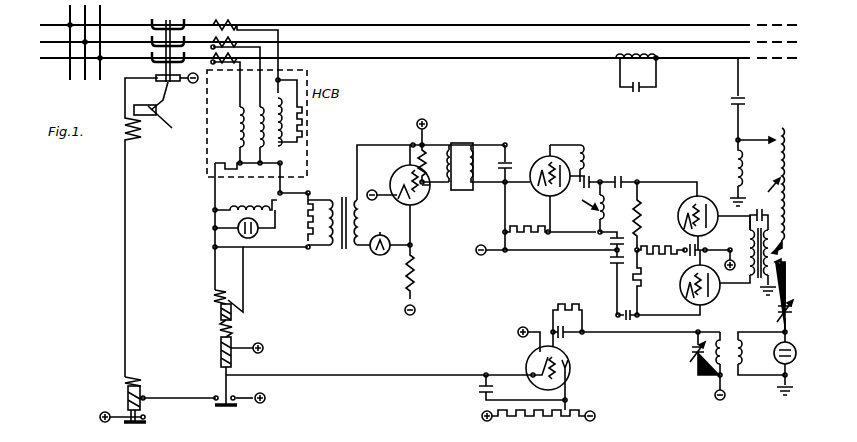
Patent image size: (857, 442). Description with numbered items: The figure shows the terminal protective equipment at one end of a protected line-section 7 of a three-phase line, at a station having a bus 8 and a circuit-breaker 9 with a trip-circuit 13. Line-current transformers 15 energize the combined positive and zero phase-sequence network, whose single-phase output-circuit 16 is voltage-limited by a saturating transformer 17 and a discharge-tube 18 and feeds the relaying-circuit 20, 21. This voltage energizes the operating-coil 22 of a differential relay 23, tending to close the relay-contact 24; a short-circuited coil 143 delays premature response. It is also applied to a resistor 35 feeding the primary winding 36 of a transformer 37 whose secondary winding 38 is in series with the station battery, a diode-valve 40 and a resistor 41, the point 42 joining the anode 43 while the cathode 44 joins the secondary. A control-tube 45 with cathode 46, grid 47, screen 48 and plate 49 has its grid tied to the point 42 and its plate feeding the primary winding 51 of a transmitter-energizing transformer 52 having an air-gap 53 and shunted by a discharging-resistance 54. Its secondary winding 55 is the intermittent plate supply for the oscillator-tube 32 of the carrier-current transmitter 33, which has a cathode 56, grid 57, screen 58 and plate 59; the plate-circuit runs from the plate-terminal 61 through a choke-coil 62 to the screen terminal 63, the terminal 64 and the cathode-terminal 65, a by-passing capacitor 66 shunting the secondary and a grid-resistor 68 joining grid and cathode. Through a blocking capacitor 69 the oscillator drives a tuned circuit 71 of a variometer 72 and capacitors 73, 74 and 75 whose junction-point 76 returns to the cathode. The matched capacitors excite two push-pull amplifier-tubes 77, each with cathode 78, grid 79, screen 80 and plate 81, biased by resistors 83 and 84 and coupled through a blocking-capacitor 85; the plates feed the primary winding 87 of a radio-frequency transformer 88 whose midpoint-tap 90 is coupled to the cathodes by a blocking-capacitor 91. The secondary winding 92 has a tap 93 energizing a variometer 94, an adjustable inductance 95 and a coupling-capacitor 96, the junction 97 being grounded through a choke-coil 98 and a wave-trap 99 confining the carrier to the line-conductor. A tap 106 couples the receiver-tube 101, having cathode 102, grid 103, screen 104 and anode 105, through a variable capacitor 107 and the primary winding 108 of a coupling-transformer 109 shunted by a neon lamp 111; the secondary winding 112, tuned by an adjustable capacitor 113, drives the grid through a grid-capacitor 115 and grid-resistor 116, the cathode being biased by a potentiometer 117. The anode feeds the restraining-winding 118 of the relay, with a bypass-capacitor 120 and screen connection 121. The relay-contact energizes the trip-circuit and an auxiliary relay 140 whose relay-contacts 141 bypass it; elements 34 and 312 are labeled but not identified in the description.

The line-section 7 is at (480, 42).
The bus 8 is at (84, 82).
The line-segregating circuit-breaker 9 is at (169, 19).
The trip-circuit 13 is at (126, 186).
The line-current transformers 15 is at (238, 22).
The output-circuit 16 is at (268, 183).
The saturating iron-core reactor or transformer 17 is at (212, 214).
The limited-voltage discharge-tube 18 is at (240, 235).
The relaying-circuit 20 is at (213, 248).
The relaying-circuit 21 is at (309, 195).
The operating-coil 22 is at (215, 304).
The differential relay 23 is at (215, 330).
The relay-contact 24 is at (212, 404).
The oscillator-tube 32 is at (538, 184).
The carrier-current transmitter 33 is at (690, 158).
The resistor 34 is at (433, 164).
The resistor 35 is at (308, 235).
The primary winding 36 is at (329, 250).
The transformer 37 is at (344, 249).
The secondary winding 38 is at (357, 248).
The diode-valve 40 is at (392, 262).
The resistor 41 is at (414, 272).
The point 42 is at (410, 246).
The anode 43 is at (384, 236).
The cathode 44 is at (376, 236).
The control-tube 45 is at (398, 176).
The cathode 46 is at (392, 185).
The grid 47 is at (415, 166).
The screen 48 is at (418, 207).
The plate 49 is at (431, 188).
The primary winding 51 is at (440, 140).
The transmitter-energizing transformer 52 is at (473, 140).
The air-gap 53 is at (464, 192).
The discharging-resistance 54 is at (444, 163).
The secondary winding 55 is at (475, 151).
The cathode 56 is at (520, 168).
The grid 57 is at (509, 165).
The screen 58 is at (555, 195).
The plate 59 is at (580, 149).
The plate-terminal 61 is at (589, 185).
The high-frequency choke-coil 62 is at (597, 154).
The terminal 63 is at (550, 144).
The terminal 64 is at (501, 144).
The cathode-terminal 65 is at (491, 184).
The high-frequency by-passing capacitor 66 is at (475, 176).
The grid-resistor 68 is at (536, 232).
The blocking capacitor 69 is at (593, 176).
The tuned circuit 71 is at (618, 297).
The variometer 72 is at (594, 215).
The capacitor 73 is at (618, 176).
The capacitor 74 is at (556, 237).
The capacitor 75 is at (637, 276).
The junction-point 76 is at (616, 275).
The amplifier-tubes 77 is at (682, 302).
The cathode 78 is at (685, 219).
The grid 79 is at (691, 206).
The screen 80 is at (707, 197).
The plate 81 is at (716, 208).
The biasing resistor 83 is at (680, 266).
The biasing resistor 84 is at (654, 240).
The blocking-capacitor 85 is at (638, 180).
The primary winding 87 is at (720, 282).
The radio-frequency transformer 88 is at (752, 220).
The midpoint-tap 90 is at (747, 246).
The blocking-capacitor 91 is at (686, 254).
The secondary winding 92 is at (767, 284).
The tap 93 is at (782, 238).
The variometer 94 is at (784, 183).
The adjustable inductance 95 is at (782, 140).
The coupling-capacitor 96 is at (735, 98).
The junction 97 is at (736, 140).
The choke-coil 98 is at (735, 156).
The wave-trap 99 is at (650, 73).
The receiver-tube 101 is at (529, 356).
The cathode 102 is at (565, 372).
The grid 103 is at (560, 362).
The screen 104 is at (531, 378).
The anode 105 is at (531, 368).
The tap 106 is at (787, 258).
The variable capacitor 107 is at (779, 321).
The primary winding 108 is at (743, 347).
The coupling-transformer 109 is at (741, 382).
The neon glow protector lamp 111 is at (742, 360).
The secondary winding 112 is at (715, 380).
The adjustable capacitor 113 is at (692, 348).
The grid-capacitor 115 is at (570, 334).
The grid-resistor 116 is at (577, 307).
The potentiometer 117 is at (530, 421).
The restraining-winding 118 is at (214, 369).
The high-frequency bypass-capacitor 120 is at (478, 386).
The connection 121 is at (538, 326).
The auxiliary relay 140 is at (137, 378).
The relay-contacts 141 is at (146, 402).
The short-circuited coil 143 is at (233, 320).
The cathode 312 is at (539, 202).